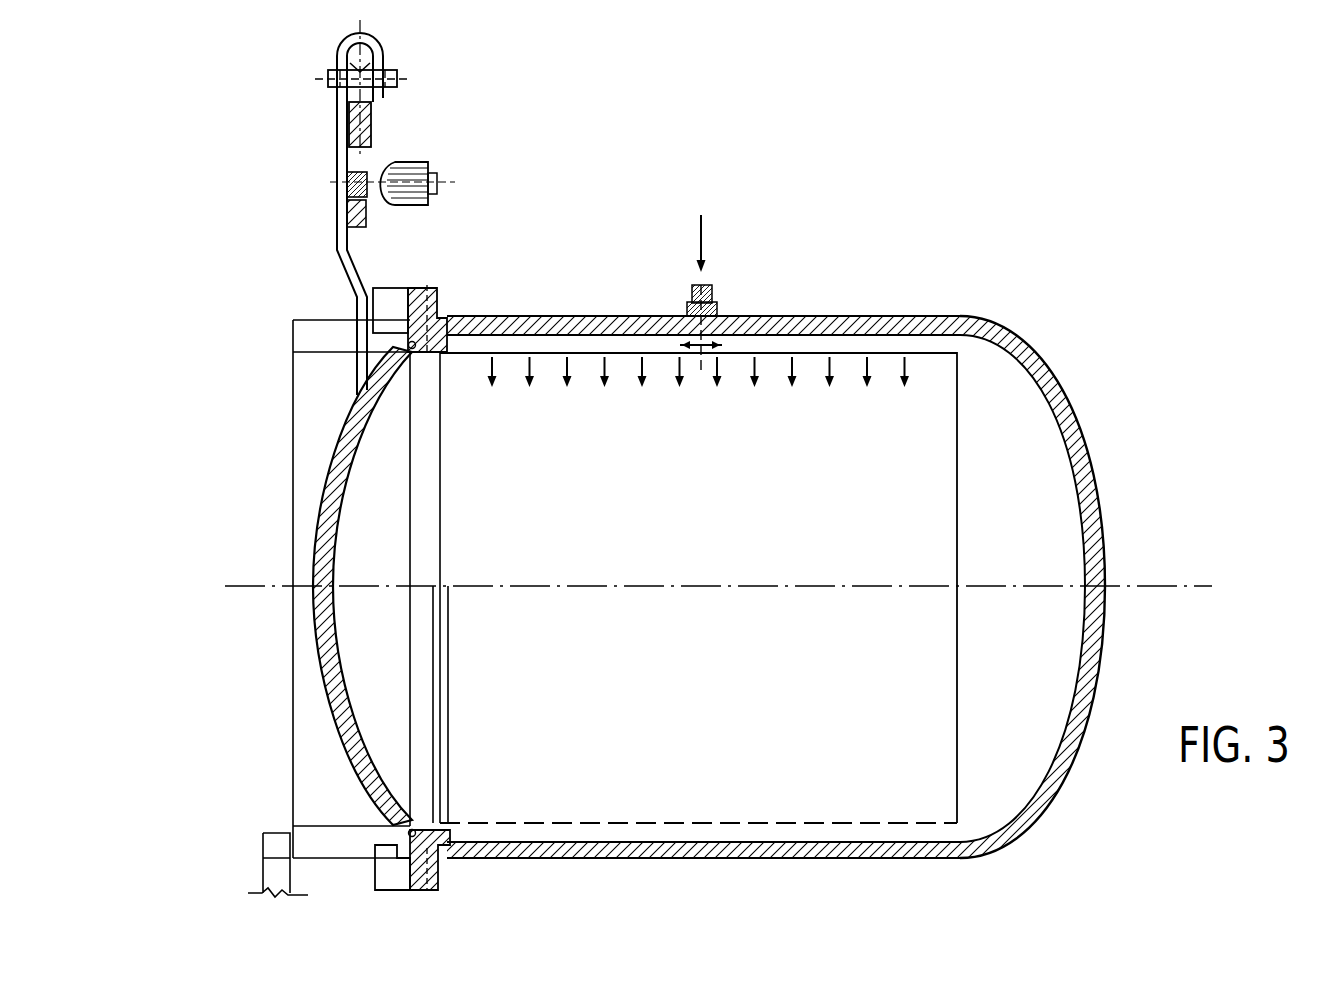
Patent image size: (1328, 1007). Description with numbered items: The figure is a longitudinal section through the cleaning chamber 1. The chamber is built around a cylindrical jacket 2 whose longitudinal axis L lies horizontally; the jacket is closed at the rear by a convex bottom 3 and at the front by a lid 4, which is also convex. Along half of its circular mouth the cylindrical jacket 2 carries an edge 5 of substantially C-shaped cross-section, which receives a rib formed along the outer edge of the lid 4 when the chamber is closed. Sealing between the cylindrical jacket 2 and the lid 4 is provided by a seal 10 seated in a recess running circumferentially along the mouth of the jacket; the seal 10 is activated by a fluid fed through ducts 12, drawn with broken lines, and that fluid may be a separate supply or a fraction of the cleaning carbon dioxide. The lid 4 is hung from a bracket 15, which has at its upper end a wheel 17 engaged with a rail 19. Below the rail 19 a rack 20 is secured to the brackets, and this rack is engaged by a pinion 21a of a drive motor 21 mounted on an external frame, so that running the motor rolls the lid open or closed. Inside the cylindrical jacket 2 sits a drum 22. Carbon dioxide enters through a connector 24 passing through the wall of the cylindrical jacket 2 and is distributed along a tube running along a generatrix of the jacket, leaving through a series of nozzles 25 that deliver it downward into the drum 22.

The cleaning chamber 1 is at (1045, 181).
The cylindrical jacket 2 is at (680, 848).
The convex bottom 3 is at (1057, 768).
The lid 4 is at (327, 670).
The edge 5 is at (376, 880).
The seal 10 is at (410, 348).
The ducts 12 is at (440, 307).
The bracket 15 is at (343, 262).
The wheel 17 is at (355, 87).
The rail 19 is at (370, 128).
The rack 20 is at (367, 213).
The drive motor 21 is at (424, 165).
The pinion 21a is at (352, 168).
The drum 22 is at (957, 488).
The connector 24 is at (707, 285).
The nozzles 25 is at (603, 350).
The longitudinal axis L is at (245, 588).